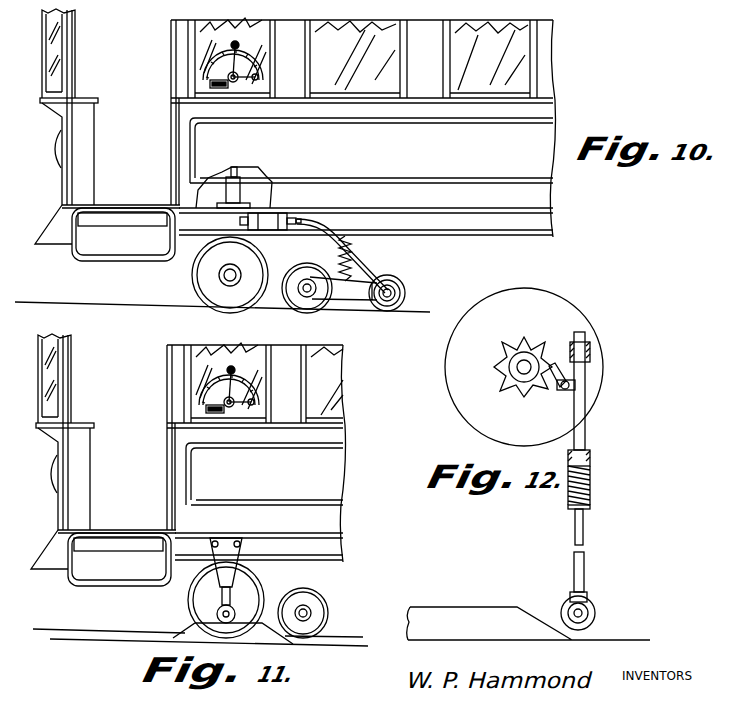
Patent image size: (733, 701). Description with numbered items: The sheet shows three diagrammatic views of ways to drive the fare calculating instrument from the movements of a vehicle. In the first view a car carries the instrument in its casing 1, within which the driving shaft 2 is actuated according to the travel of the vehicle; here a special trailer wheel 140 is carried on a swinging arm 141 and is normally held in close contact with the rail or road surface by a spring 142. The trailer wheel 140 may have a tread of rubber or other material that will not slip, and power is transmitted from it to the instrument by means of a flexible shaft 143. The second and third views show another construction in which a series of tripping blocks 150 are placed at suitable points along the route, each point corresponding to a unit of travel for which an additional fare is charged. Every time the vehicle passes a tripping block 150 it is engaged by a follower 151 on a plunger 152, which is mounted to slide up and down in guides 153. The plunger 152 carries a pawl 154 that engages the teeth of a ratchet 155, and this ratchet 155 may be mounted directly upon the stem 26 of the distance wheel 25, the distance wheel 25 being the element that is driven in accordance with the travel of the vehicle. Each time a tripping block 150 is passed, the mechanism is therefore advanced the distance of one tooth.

In FIG. 10, the casing 1 is at (187, 92).
In FIG. 11, the casing 1 is at (200, 401).
In FIG. 10, the driving shaft 2 is at (240, 171).
In FIG. 12, the distance wheel 25 is at (545, 300).
In FIG. 12, the stem 26 is at (520, 351).
In FIG. 10, the trailer wheel 140 is at (405, 291).
In FIG. 10, the swinging arm 141 is at (356, 302).
In FIG. 10, the spring 142 is at (352, 249).
In FIG. 10, the flexible shaft 143 is at (330, 236).
In FIG. 11, the tripping block 150 is at (213, 625).
In FIG. 12, the tripping block 150 is at (482, 597).
In FIG. 11, the follower 151 is at (265, 580).
In FIG. 12, the follower 151 is at (593, 613).
In FIG. 12, the plunger 152 is at (585, 530).
In FIG. 12, the guides 153 is at (590, 352).
In FIG. 12, the pawl 154 is at (562, 368).
In FIG. 12, the ratchet 155 is at (530, 390).